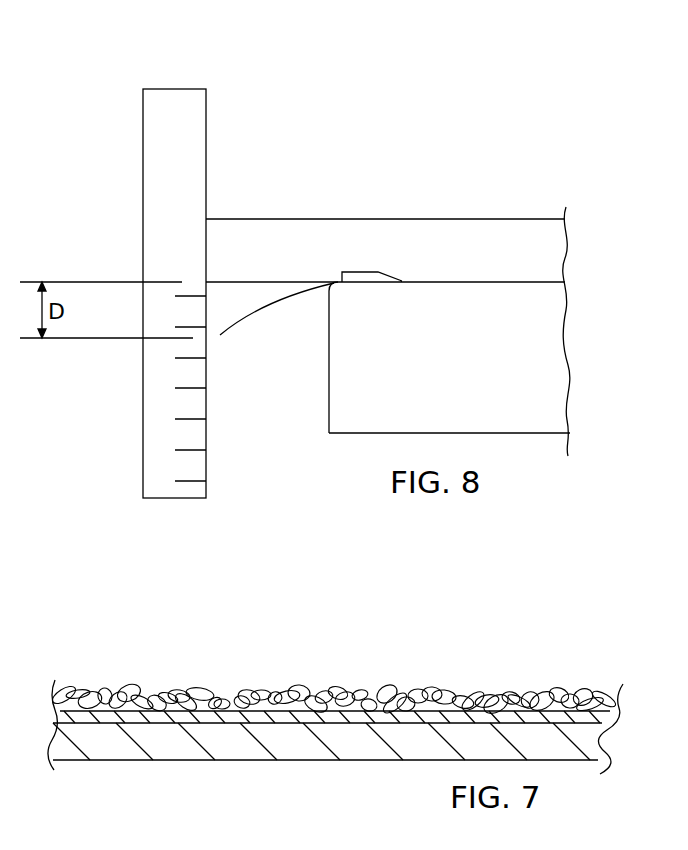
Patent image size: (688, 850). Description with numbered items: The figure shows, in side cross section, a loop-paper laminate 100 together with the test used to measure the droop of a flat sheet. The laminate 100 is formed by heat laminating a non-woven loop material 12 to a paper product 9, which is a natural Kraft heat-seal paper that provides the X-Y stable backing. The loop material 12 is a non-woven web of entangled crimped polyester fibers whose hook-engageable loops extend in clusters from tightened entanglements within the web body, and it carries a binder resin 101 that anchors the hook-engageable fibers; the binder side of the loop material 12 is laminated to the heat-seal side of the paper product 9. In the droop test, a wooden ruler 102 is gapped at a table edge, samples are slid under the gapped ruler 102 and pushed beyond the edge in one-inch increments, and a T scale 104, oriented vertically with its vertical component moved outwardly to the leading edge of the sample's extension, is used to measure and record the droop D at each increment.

In FIG. 7, the laminate 100 is at (335, 715).
In FIG. 7, the non-woven loop material 12 is at (293, 700).
In FIG. 7, the binder resin 101 is at (150, 712).
In FIG. 7, the paper product 9 is at (310, 760).
In FIG. 8, the T scale 104 is at (262, 218).
In FIG. 8, the wooden ruler 102 is at (358, 271).